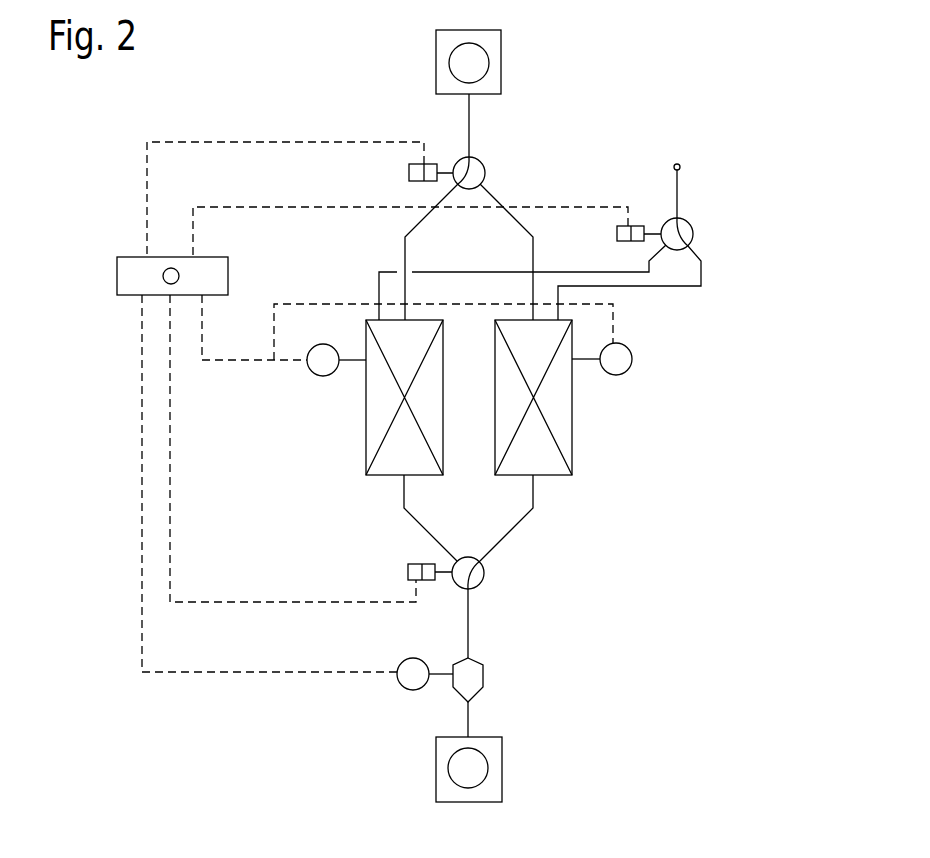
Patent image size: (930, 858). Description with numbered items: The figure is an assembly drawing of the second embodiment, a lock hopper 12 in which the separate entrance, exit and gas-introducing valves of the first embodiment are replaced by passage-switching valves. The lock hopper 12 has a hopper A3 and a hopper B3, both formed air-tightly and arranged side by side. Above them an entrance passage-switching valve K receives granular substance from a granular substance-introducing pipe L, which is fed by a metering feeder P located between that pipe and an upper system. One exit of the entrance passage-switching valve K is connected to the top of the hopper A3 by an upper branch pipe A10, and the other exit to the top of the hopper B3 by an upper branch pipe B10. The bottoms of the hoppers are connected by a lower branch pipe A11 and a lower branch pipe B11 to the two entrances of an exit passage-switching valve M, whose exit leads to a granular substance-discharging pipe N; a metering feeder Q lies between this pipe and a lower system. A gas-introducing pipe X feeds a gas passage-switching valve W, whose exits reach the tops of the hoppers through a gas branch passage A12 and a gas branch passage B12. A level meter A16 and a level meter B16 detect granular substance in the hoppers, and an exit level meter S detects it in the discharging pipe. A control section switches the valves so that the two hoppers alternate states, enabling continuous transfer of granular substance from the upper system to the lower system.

The lock hopper 12 is at (308, 123).
The metering feeder P is at (504, 68).
The granular substance-introducing pipe L is at (467, 138).
The entrance passage-switching valve K is at (487, 172).
The upper branch pipe A10 is at (416, 227).
The upper branch pipe B10 is at (523, 223).
The gas-introducing pipe X is at (677, 193).
The gas passage-switching valve W is at (695, 234).
The gas branch passage A12 is at (632, 273).
The gas branch passage B12 is at (683, 288).
The hopper A3 is at (365, 420).
The hopper B3 is at (572, 417).
The level meter A16 is at (310, 368).
The level meter B16 is at (632, 368).
The lower branch pipe A11 is at (415, 523).
The lower branch pipe B11 is at (517, 523).
The exit passage-switching valve M is at (485, 577).
The granular substance-discharging pipe N is at (468, 620).
The exit level meter S is at (403, 685).
The metering feeder Q is at (503, 763).